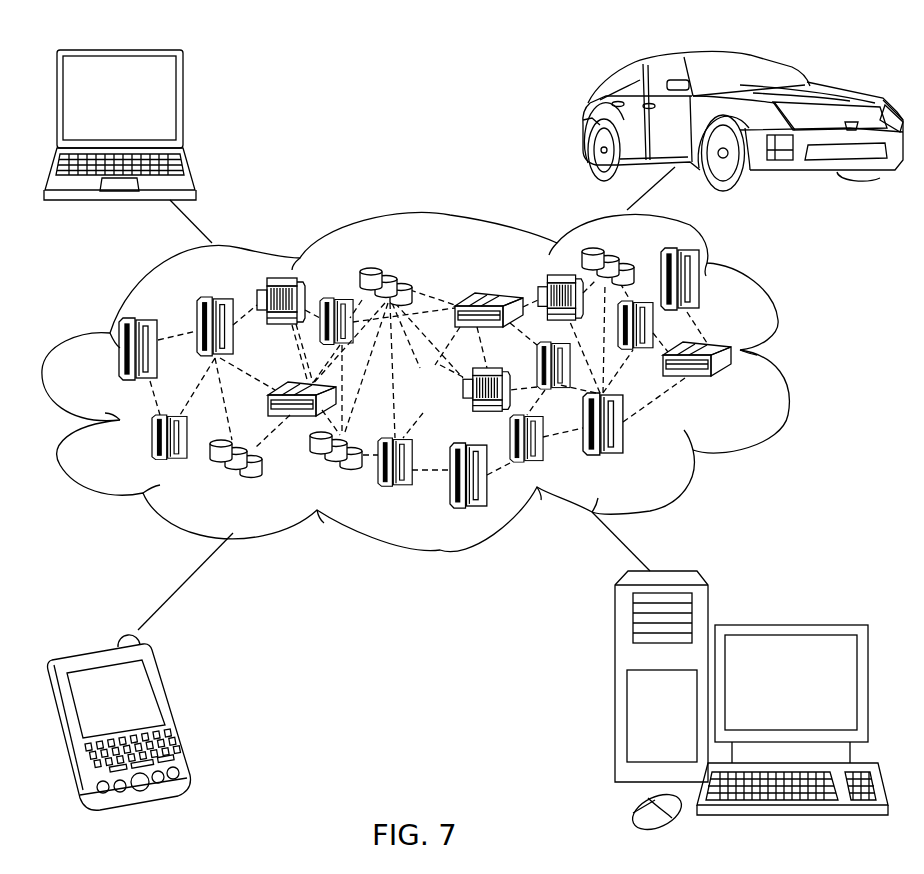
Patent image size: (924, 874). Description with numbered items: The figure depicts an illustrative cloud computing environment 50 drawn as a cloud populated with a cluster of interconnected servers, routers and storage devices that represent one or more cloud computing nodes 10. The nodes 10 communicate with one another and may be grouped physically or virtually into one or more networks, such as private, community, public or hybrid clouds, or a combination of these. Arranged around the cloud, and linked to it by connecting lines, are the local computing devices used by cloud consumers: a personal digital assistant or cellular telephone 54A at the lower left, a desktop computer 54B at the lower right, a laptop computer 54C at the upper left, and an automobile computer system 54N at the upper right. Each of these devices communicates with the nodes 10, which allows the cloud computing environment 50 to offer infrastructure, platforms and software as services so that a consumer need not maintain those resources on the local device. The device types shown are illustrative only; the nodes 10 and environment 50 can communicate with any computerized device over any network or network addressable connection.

The cloud computing nodes 10 is at (745, 391).
The cloud computing environment 50 is at (787, 357).
The personal digital assistant or cellular telephone 54A is at (173, 712).
The desktop computer 54B is at (788, 623).
The laptop computer 54C is at (185, 108).
The automobile computer system 54N is at (586, 122).